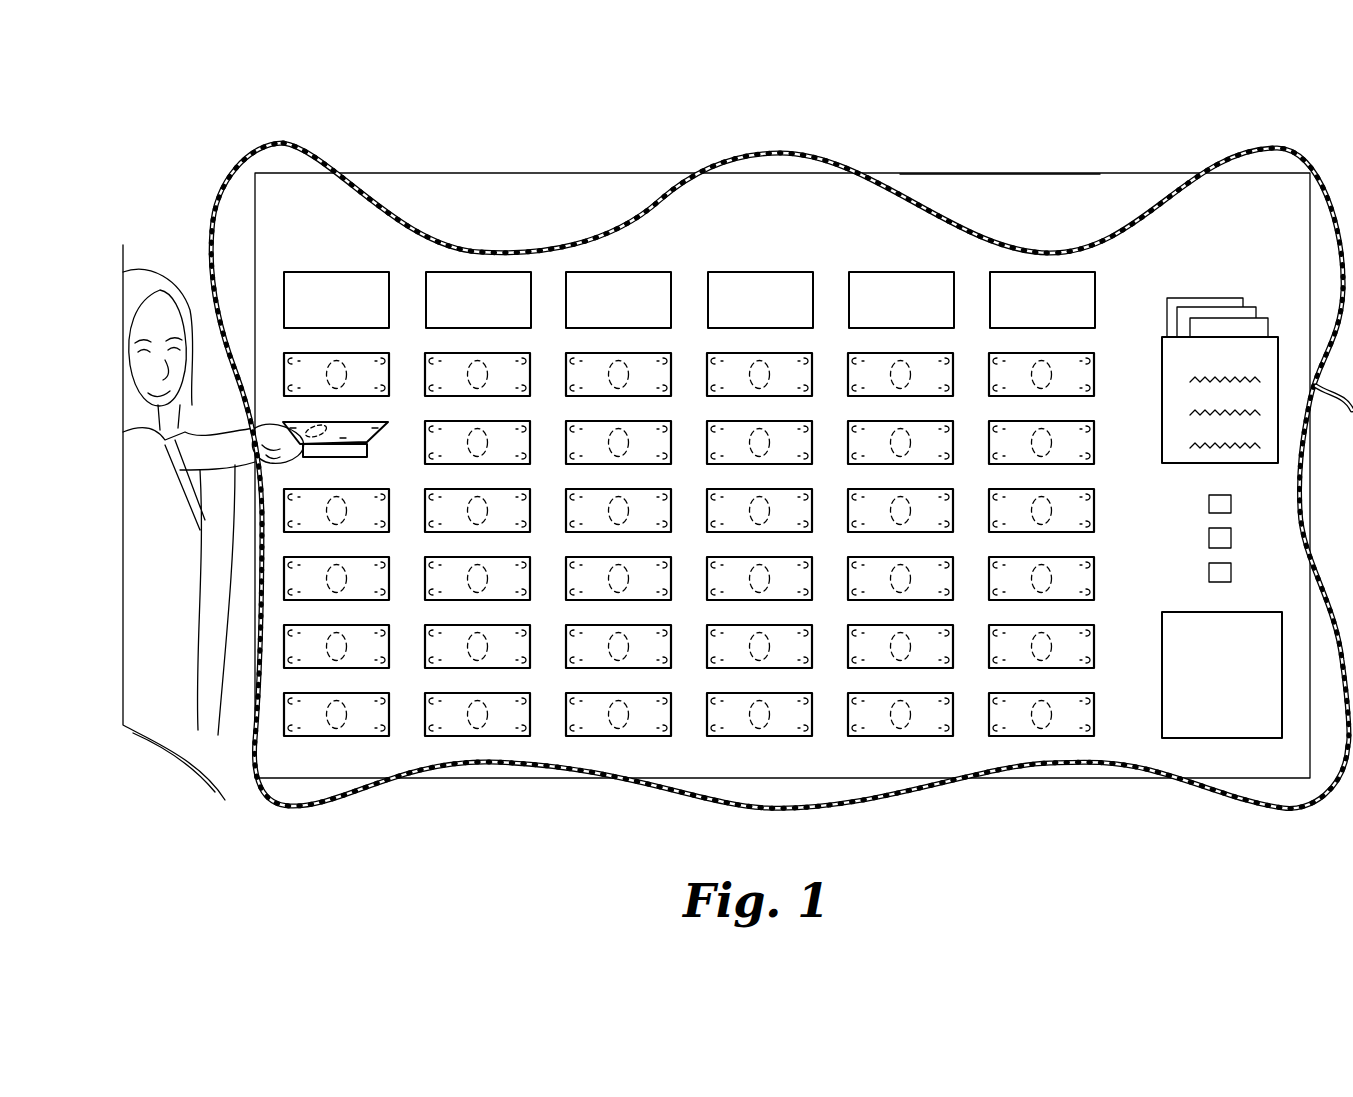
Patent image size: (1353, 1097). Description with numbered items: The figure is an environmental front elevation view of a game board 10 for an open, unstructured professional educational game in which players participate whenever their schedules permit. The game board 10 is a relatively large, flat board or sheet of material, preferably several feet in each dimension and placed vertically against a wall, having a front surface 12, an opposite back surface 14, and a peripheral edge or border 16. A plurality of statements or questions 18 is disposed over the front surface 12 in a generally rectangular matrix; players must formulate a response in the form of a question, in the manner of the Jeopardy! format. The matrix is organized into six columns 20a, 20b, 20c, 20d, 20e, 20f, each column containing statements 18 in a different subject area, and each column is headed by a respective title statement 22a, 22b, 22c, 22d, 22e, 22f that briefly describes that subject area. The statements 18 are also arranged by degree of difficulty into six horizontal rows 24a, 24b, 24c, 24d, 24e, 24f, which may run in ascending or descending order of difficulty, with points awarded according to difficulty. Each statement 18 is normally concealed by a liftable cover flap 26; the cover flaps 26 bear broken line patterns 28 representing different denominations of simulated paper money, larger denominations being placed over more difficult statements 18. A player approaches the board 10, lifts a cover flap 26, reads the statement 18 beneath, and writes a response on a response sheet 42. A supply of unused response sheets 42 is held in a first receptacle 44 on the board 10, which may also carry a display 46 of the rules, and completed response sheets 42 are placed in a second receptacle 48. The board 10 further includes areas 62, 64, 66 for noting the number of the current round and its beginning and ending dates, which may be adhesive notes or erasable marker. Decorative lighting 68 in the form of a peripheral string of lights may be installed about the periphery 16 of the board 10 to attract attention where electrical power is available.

The game board 10 is at (418, 858).
The front surface 12 is at (400, 188).
The back surface 14 is at (562, 195).
The peripheral edge or border 16 is at (1020, 174).
The statements or questions 18 is at (367, 444).
The first column 20a is at (340, 740).
The second column 20b is at (680, 599).
The third column 20c is at (605, 740).
The fourth column 20d is at (738, 740).
The fifth column 20e is at (875, 740).
The sixth column 20f is at (1015, 740).
The title statement 22a is at (330, 272).
The title statement 22b is at (490, 272).
The title statement 22c is at (650, 272).
The title statement 22d is at (748, 272).
The title statement 22e is at (870, 272).
The title statement 22f is at (1037, 272).
The first row 24a is at (284, 297).
The second row 24b is at (290, 430).
The third row 24c is at (284, 505).
The fourth row 24d is at (284, 572).
The fifth row 24e is at (284, 640).
The sixth row 24f is at (284, 708).
The liftable cover flap 26 is at (389, 378).
The broken line patterns 28 is at (748, 500).
The response sheet 42 is at (1258, 310).
The first receptacle 44 is at (1165, 337).
The display of the rules 46 is at (1162, 445).
The second receptacle 48 is at (1180, 740).
The round indicator area 62 is at (1232, 504).
The beginning date indicator area 64 is at (1232, 538).
The ending date indicator area 66 is at (1232, 572).
The decorative lighting 68 is at (268, 148).